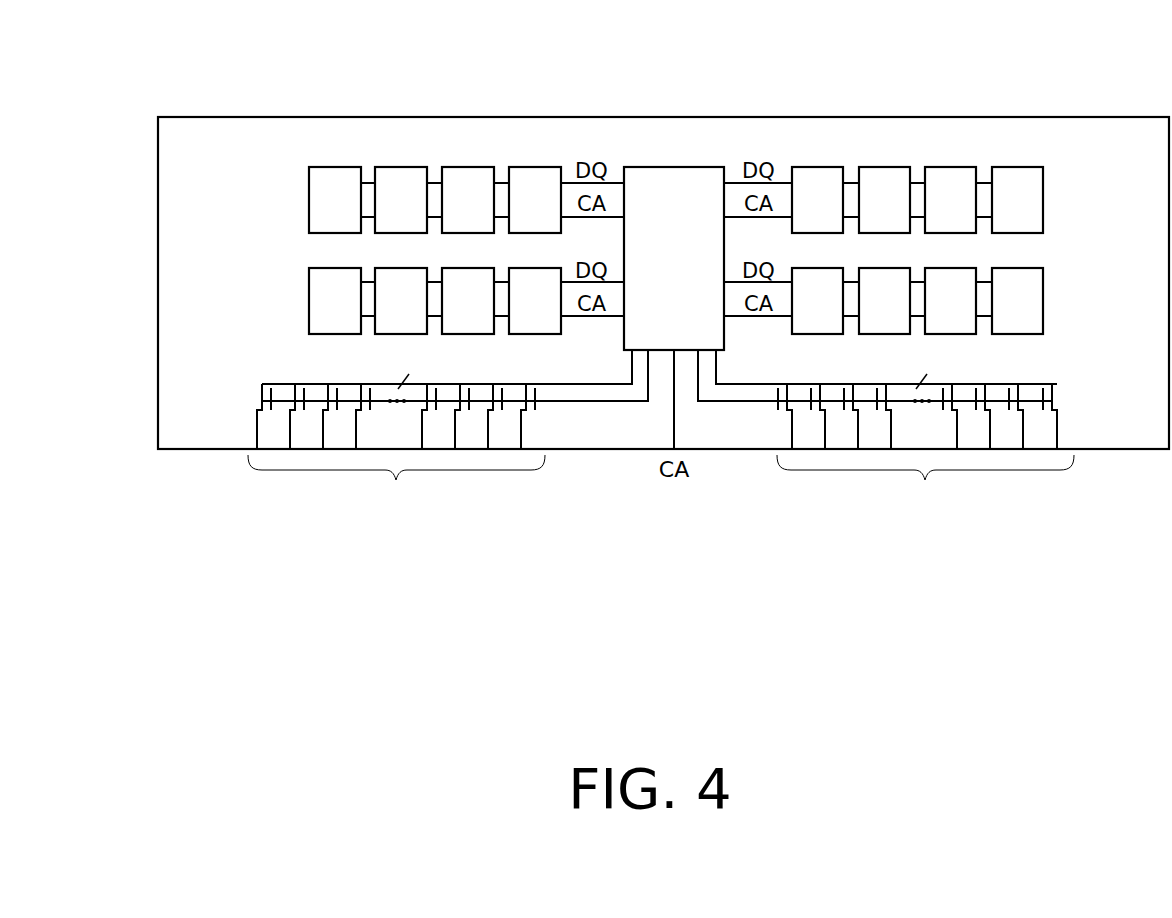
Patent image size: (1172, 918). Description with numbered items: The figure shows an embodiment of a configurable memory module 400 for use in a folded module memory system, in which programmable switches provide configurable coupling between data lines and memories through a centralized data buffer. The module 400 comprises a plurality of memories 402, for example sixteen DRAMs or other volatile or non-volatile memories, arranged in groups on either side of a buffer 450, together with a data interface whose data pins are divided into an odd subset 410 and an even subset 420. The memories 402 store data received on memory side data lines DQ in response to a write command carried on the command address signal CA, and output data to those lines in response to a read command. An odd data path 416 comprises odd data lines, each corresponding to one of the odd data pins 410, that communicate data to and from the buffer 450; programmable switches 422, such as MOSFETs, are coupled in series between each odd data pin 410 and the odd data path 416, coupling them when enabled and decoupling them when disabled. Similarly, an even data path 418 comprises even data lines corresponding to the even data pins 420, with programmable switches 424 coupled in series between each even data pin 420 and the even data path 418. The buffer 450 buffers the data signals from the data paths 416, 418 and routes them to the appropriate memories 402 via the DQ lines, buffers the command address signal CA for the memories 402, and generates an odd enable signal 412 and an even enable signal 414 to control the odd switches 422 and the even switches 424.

The configurable memory module 400 is at (274, 83).
The memories 402 is at (676, 250).
The buffer 450 is at (656, 249).
The odd data path 416 is at (556, 383).
The even data path 418 is at (751, 383).
The odd enable signal 412 is at (666, 432).
The even enable signal 414 is at (780, 432).
The odd data pins 410 is at (375, 459).
The even data pins 420 is at (946, 461).
The programmable switches 422 is at (261, 411).
The programmable switches 424 is at (1060, 411).